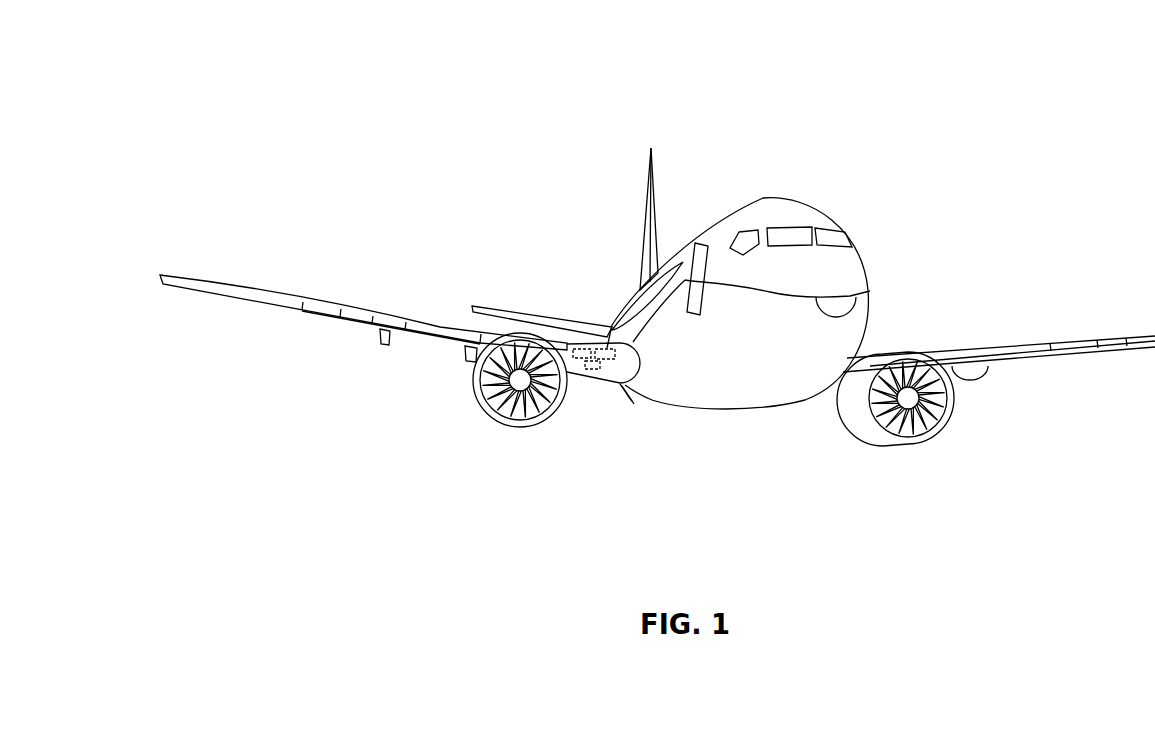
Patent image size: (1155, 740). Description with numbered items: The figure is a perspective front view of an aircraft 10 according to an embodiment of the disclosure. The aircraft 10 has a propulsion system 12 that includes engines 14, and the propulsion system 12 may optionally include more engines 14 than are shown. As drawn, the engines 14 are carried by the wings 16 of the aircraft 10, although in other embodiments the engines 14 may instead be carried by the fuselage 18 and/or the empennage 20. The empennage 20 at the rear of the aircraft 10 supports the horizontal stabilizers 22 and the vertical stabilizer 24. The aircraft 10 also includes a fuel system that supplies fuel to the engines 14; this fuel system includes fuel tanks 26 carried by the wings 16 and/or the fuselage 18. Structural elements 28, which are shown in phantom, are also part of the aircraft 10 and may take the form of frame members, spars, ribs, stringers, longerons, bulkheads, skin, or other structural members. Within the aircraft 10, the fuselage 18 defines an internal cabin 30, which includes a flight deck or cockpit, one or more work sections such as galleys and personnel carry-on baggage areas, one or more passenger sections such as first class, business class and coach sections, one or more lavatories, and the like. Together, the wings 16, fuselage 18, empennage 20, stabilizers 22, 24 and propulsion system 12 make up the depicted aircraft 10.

The aircraft 10 is at (418, 98).
The propulsion system 12 is at (349, 432).
The engines 14 is at (513, 426).
The wings 16 is at (297, 300).
The fuselage 18 is at (866, 262).
The empennage 20 is at (640, 292).
The horizontal stabilizers 22 is at (510, 308).
The vertical stabilizer 24 is at (648, 193).
The fuel tanks 26 is at (636, 408).
The structural elements 28 is at (583, 372).
The internal cabin 30 is at (800, 237).